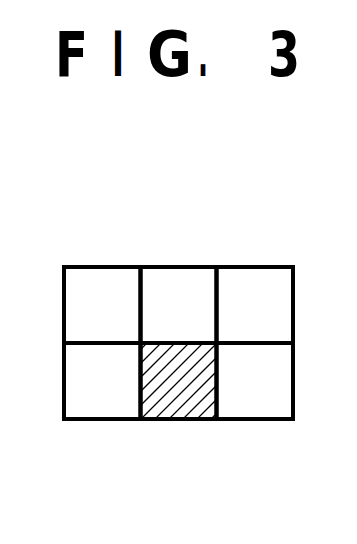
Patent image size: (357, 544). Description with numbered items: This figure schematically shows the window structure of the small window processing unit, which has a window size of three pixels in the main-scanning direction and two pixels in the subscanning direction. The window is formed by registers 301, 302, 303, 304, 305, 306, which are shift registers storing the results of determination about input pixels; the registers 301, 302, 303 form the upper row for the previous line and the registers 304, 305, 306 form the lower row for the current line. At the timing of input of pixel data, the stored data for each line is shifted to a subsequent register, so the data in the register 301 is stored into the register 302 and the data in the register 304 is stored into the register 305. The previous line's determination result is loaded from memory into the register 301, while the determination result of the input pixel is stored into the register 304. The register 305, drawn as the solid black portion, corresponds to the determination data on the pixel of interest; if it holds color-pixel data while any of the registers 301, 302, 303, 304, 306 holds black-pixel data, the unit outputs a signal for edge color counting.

The register 301 is at (255, 265).
The register 302 is at (180, 265).
The register 303 is at (102, 265).
The register 304 is at (250, 421).
The register 305 is at (173, 421).
The register 306 is at (95, 421).